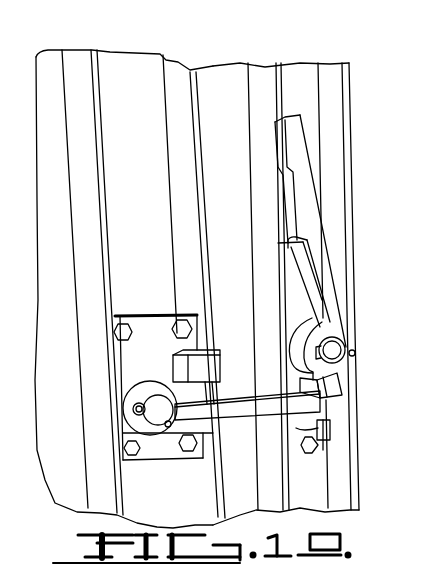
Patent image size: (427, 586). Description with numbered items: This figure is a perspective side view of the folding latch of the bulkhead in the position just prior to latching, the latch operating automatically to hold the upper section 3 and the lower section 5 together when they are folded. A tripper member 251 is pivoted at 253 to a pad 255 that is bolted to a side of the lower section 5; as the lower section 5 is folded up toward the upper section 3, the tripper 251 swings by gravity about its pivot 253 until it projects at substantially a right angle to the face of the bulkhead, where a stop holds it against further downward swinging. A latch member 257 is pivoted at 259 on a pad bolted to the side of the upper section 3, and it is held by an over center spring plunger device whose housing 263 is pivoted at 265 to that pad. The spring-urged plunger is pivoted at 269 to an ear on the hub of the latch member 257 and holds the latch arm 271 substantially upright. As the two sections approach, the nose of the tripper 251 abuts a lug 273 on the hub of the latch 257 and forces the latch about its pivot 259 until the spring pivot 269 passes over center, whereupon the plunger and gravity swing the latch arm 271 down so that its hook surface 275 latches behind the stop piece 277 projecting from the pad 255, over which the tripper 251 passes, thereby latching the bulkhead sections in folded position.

The lower section 5 is at (136, 55).
The upper section 3 is at (353, 108).
The hook surface 275 is at (306, 243).
The latch arm 271 is at (320, 257).
The latch member 257 is at (334, 288).
The pivot 259 is at (346, 347).
The pivot 269 is at (313, 382).
The lug 273 is at (335, 395).
The housing 263 is at (300, 430).
The pivot 265 is at (320, 452).
The stop piece 277 is at (213, 353).
The pivot 253 is at (160, 396).
The tripper member 251 is at (245, 413).
The pad 255 is at (150, 453).